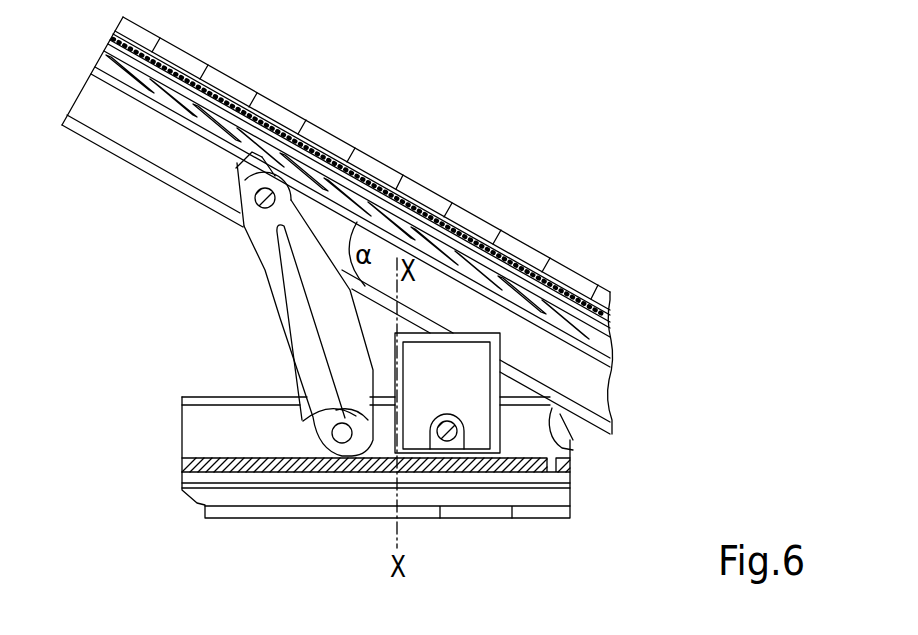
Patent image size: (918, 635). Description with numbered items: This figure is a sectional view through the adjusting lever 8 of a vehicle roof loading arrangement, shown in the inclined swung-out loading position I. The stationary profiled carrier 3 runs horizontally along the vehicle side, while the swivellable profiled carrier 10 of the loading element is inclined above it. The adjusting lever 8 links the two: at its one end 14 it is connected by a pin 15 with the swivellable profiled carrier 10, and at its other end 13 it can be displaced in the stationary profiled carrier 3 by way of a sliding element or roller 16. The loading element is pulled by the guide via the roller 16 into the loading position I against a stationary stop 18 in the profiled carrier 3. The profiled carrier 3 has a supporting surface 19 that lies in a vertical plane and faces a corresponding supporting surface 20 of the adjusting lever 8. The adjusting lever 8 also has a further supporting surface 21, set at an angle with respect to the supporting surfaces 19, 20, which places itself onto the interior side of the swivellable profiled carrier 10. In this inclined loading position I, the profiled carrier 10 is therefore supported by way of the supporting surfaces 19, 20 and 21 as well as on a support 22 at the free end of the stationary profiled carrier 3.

The inclined loading position I is at (416, 140).
The profiled carrier 3 is at (342, 508).
The adjusting lever 8 is at (268, 280).
The swivellable profiled carrier 10 is at (455, 217).
The other end of the adjusting lever 13 is at (305, 408).
The one end of the adjusting lever 14 is at (233, 173).
The pin 15 is at (258, 200).
The roller 16 is at (342, 407).
The stationary stop 18 is at (483, 363).
The supporting surface 19 is at (397, 380).
The supporting surface of the adjusting lever 20 is at (395, 412).
The further supporting surface 21 is at (253, 157).
The support 22 is at (571, 441).